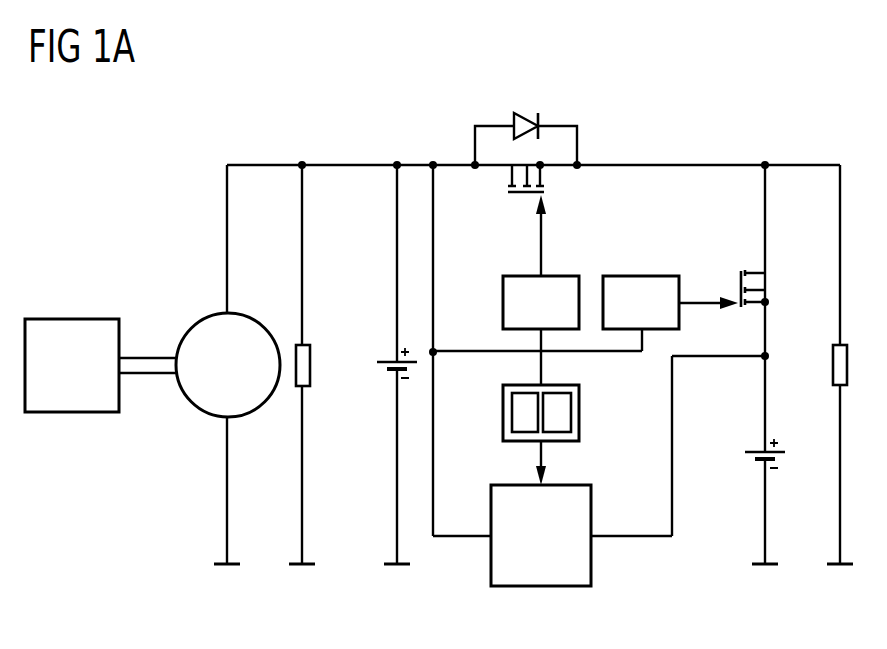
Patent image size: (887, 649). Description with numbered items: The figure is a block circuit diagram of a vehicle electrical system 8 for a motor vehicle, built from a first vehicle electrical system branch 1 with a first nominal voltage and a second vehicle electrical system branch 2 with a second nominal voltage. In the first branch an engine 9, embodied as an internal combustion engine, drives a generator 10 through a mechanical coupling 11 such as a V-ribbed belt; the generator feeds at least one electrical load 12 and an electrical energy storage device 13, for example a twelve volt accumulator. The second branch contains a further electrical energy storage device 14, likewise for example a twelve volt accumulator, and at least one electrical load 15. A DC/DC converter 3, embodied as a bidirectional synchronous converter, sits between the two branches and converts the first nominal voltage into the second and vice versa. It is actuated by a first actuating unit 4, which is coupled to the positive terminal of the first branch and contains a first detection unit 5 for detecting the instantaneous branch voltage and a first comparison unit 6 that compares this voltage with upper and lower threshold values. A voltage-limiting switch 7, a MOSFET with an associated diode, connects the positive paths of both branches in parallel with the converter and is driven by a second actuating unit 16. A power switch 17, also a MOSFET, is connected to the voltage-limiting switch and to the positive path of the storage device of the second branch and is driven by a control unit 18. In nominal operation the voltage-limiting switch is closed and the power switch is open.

The first vehicle electrical system branch 1 is at (363, 137).
The second vehicle electrical system branch 2 is at (718, 127).
The DC/DC converter 3 is at (491, 558).
The first actuating unit 4 is at (539, 435).
The first detection unit 5 is at (503, 412).
The first comparison unit 6 is at (579, 412).
The voltage-limiting switch 7 is at (570, 105).
The vehicle electrical system 8 is at (160, 152).
The engine 9 is at (73, 325).
The generator 10 is at (197, 330).
The mechanical coupling 11 is at (152, 363).
The electrical load 12 is at (312, 370).
The electrical energy storage device 13 is at (392, 360).
The electrical energy storage device 14 is at (758, 450).
The electrical load 15 is at (833, 366).
The second actuating unit 16 is at (558, 275).
The power switch 17 is at (740, 290).
The control unit 18 is at (640, 275).